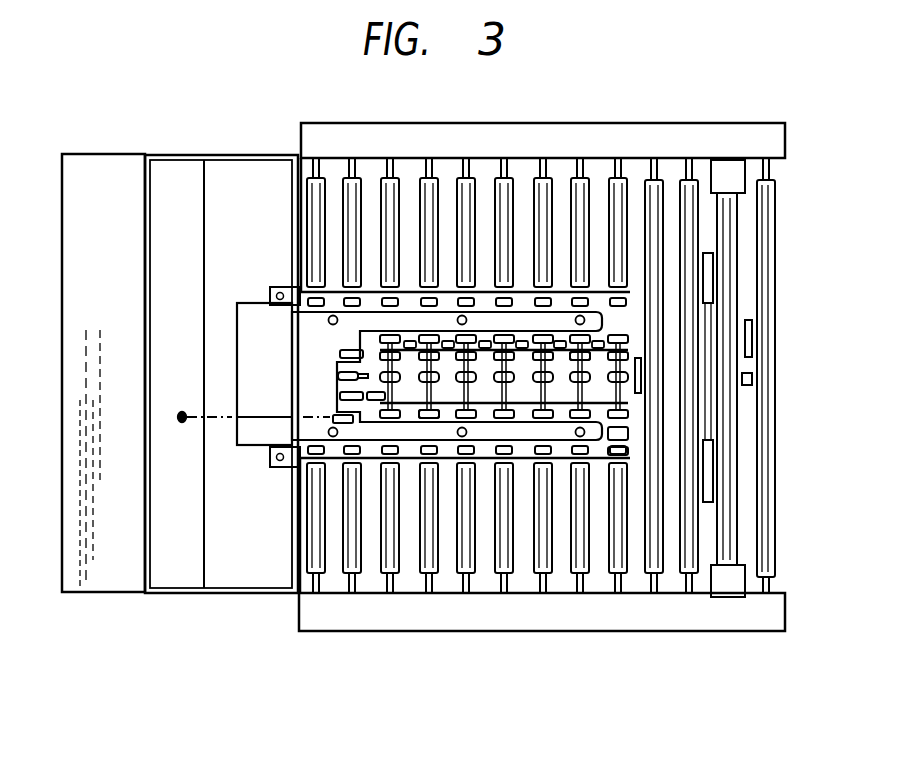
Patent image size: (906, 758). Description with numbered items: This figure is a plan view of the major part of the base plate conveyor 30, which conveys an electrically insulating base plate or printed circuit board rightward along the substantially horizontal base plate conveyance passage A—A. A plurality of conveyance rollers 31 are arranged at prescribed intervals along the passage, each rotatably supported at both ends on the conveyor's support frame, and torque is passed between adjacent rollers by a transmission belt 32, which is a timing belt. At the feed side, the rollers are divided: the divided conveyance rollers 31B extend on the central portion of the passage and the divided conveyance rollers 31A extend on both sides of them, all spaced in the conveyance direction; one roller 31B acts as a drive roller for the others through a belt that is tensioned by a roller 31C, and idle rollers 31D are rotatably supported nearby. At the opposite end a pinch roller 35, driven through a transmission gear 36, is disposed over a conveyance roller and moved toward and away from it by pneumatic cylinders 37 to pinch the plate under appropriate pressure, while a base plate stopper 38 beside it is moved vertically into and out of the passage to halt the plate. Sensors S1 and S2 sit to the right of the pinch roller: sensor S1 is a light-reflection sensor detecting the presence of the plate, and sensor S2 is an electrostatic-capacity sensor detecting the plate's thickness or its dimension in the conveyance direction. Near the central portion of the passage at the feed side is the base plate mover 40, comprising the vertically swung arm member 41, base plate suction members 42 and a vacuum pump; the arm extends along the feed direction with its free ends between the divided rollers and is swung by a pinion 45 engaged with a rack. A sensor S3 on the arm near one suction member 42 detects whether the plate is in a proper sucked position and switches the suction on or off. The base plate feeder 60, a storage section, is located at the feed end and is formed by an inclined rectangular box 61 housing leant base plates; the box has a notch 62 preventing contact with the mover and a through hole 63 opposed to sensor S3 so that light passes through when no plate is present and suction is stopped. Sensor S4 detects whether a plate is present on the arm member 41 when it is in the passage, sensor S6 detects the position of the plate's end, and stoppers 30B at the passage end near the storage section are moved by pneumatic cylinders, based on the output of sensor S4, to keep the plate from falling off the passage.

The base plate conveyor 30 is at (657, 121).
The stoppers 30B is at (280, 294).
The conveyance rollers 31 is at (695, 200).
The divided conveyance rollers 31A is at (385, 190).
The divided conveyance rollers 31B is at (383, 335).
The roller 31C is at (472, 217).
The idle rollers 31D is at (339, 352).
The transmission belt 32 is at (578, 333).
The pinch roller 35 is at (733, 230).
The transmission gear 36 is at (776, 250).
The pneumatic cylinders 37 is at (745, 172).
The base plate stopper 38 is at (712, 500).
The base plate mover 40 is at (276, 330).
The vertically swung arm member 41 is at (313, 395).
The base plate suction member 42 is at (462, 315).
The pinion 45 is at (305, 395).
The base plate feeder 60 is at (72, 307).
The box 61 is at (104, 166).
The notch 62 is at (242, 445).
The through hole 63 is at (183, 424).
The base plate conveyance passage A is at (282, 375).
The sensor S1 is at (750, 322).
The sensor S2 is at (749, 385).
The sensor S3 is at (379, 541).
The sensor S4 is at (418, 548).
The sensor S6 is at (638, 356).